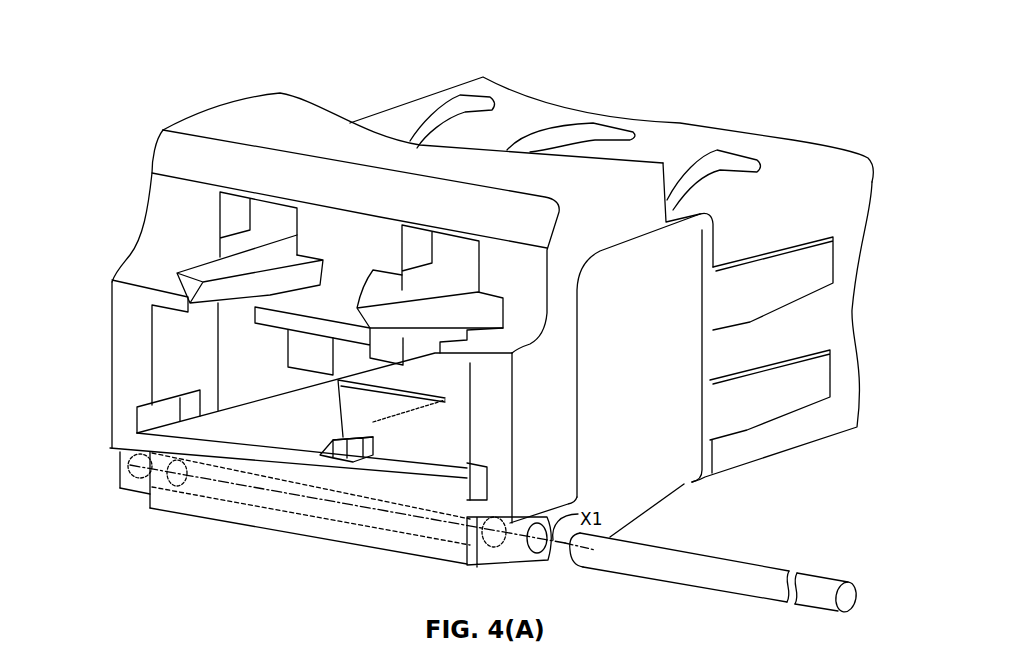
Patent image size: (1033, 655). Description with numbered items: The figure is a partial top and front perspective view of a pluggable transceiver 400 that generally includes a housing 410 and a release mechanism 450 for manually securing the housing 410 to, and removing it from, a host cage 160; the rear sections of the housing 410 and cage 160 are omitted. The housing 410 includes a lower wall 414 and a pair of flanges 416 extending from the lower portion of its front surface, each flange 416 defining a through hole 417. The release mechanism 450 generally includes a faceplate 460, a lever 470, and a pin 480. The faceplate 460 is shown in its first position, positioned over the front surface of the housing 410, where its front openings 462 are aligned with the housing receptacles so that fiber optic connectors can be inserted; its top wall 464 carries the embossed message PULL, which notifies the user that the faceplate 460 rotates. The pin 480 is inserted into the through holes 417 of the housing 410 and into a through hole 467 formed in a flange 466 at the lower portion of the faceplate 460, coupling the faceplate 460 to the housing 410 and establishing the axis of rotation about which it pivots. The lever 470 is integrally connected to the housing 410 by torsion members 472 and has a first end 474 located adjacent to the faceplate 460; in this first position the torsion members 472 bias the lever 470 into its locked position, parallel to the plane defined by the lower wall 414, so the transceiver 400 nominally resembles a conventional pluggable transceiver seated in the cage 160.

The pluggable transceiver 400 is at (146, 106).
The top wall 464 is at (255, 122).
The front openings 462 is at (406, 363).
The lower wall 414 is at (272, 412).
The through hole 417 is at (133, 482).
The flanges 416 is at (178, 494).
The through hole 467 is at (193, 505).
The flange 466 is at (198, 508).
The release mechanism 450 is at (130, 545).
The faceplate 460 is at (205, 526).
The lever 470 is at (374, 422).
The pin 480 is at (576, 569).
The first end 474 is at (333, 456).
The torsion members 472 is at (431, 389).
The housing 410 is at (665, 465).
The host cage 160 is at (769, 454).